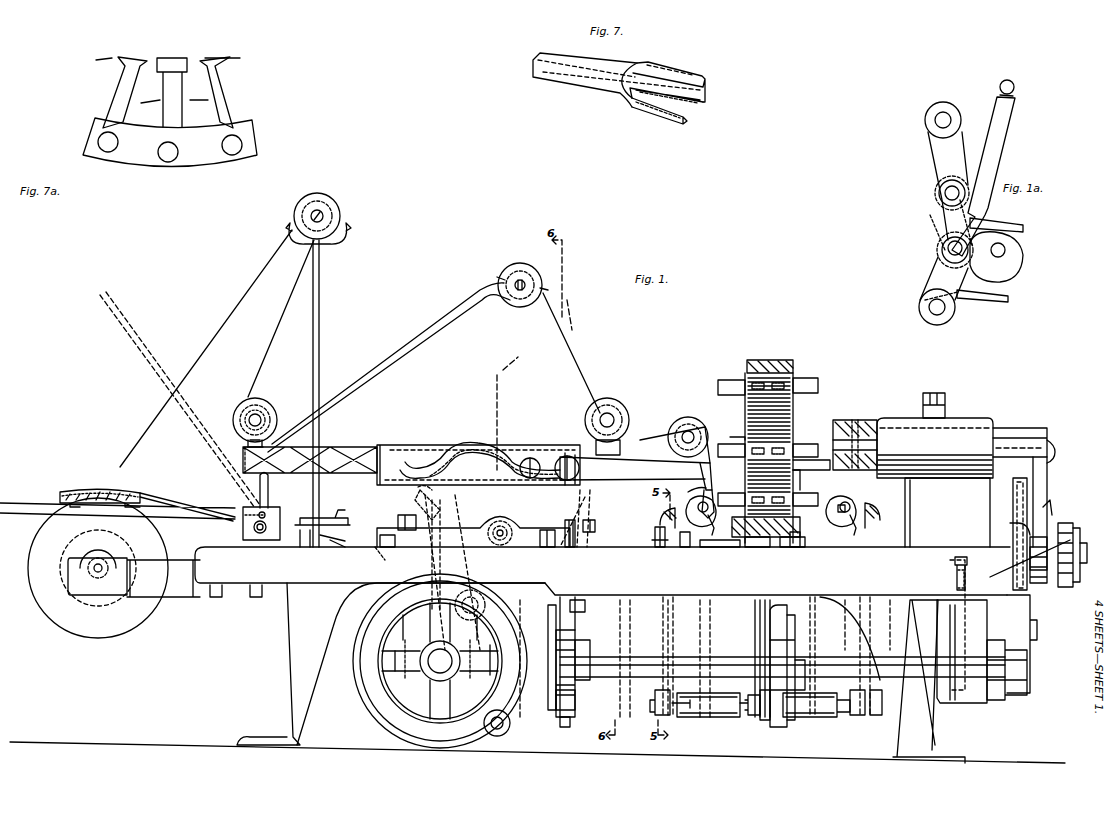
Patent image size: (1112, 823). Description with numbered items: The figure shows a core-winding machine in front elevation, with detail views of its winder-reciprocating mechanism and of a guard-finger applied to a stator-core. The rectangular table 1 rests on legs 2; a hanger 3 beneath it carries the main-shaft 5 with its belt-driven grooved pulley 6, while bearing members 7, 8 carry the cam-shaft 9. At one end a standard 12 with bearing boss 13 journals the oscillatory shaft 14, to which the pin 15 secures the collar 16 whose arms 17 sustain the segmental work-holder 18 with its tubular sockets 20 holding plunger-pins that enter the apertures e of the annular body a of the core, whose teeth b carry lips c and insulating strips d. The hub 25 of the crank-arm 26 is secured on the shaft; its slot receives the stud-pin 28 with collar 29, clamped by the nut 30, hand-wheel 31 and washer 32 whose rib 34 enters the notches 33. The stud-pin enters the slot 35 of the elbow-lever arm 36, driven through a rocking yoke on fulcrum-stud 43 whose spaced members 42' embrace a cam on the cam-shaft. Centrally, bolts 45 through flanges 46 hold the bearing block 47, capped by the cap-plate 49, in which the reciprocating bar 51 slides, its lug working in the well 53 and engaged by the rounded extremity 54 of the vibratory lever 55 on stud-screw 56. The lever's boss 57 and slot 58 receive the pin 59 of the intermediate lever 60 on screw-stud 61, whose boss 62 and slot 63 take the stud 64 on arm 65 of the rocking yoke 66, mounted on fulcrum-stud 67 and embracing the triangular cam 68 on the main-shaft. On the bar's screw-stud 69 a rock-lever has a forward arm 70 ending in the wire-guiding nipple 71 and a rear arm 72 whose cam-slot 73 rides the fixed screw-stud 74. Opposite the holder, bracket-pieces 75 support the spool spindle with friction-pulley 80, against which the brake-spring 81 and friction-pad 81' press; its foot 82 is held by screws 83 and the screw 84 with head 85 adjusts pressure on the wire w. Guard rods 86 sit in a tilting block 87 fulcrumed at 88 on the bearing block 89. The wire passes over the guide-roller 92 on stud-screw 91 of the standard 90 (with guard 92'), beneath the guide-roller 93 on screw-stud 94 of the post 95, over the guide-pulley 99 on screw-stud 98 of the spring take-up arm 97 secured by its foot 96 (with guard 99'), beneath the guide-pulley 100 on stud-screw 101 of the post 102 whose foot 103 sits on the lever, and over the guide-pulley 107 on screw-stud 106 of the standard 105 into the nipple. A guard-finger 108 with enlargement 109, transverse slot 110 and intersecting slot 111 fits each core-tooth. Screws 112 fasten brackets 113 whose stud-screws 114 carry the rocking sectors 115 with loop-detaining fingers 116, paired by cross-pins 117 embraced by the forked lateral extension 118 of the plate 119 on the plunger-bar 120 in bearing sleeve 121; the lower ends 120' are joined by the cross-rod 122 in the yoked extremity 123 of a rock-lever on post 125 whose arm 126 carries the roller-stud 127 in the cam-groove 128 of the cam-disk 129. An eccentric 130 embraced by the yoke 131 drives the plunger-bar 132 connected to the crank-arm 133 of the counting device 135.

In FIG. 1, the table 1 is at (602, 571).
In FIG. 1, the legs 2 is at (601, 673).
In FIG. 1, the hanger 3 is at (428, 631).
In FIG. 1a, the main-shaft 5 is at (998, 250).
In FIG. 1, the main-shaft 5 is at (440, 661).
In FIG. 1, the grooved pulley 6 is at (353, 672).
In FIG. 1, the bearing member 7 is at (554, 657).
In FIG. 1, the bearing member 8 is at (962, 631).
In FIG. 1, the cam-shaft 9 is at (688, 660).
In FIG. 1, the standard 12 is at (947, 512).
In FIG. 1, the bearing boss 13 is at (935, 448).
In FIG. 1, the oscillatory shaft 14 is at (968, 433).
In FIG. 1, the pin 15 is at (856, 420).
In FIG. 1, the collar 16 is at (852, 436).
In FIG. 1, the arms 17 is at (811, 460).
In FIG. 1, the segmental work-holder 18 is at (802, 478).
In FIG. 1, the tubular socket 20 is at (733, 433).
In FIG. 1, the hub 25 is at (1005, 430).
In FIG. 1, the crank-arm 26 is at (1048, 484).
In FIG. 1, the stud-pin 28 is at (1010, 556).
In FIG. 1, the collar 29 is at (1012, 525).
In FIG. 1, the nut 30 is at (1068, 523).
In FIG. 1, the hand-wheel 31 is at (1078, 532).
In FIG. 1, the washer 32 is at (1045, 585).
In FIG. 1, the notches 33 is at (1029, 539).
In FIG. 1, the V-shaped transverse rib 34 is at (1088, 550).
In FIG. 1, the slot 35 is at (1016, 501).
In FIG. 1, the arm 36 is at (1013, 492).
In FIG. 1, the spaced members 42' is at (1007, 670).
In FIG. 1, the fulcrum-stud 43 is at (1037, 630).
In FIG. 1, the bolts 45 is at (497, 517).
In FIG. 1, the flanges 46 is at (547, 538).
In FIG. 1, the bearing block 47 is at (510, 516).
In FIG. 1, the cap-plate 49 is at (417, 445).
In FIG. 1, the reciprocating bar 51 is at (310, 460).
In FIG. 1, the well 53 is at (586, 498).
In FIG. 1a, the rounded extremity 54 is at (1000, 86).
In FIG. 1, the rounded extremity 54 is at (443, 498).
In FIG. 1a, the vibratory lever 55 is at (991, 112).
In FIG. 1, the vibratory lever 55 is at (450, 526).
In FIG. 1, the stud-screw 56 is at (510, 726).
In FIG. 1a, the boss 57 is at (940, 258).
In FIG. 1a, the slot 58 is at (959, 294).
In FIG. 1a, the pin 59 is at (963, 253).
In FIG. 1a, the intermediate lever 60 is at (932, 154).
In FIG. 1, the intermediate lever 60 is at (456, 566).
In FIG. 1, the screw-stud 61 is at (512, 528).
In FIG. 1a, the boss 62 is at (939, 201).
In FIG. 1a, the slot 63 is at (938, 183).
In FIG. 1, the slot 63 is at (500, 600).
In FIG. 1a, the stud 64 is at (945, 193).
In FIG. 1, the stud 64 is at (500, 608).
In FIG. 1a, the arm 65 is at (932, 223).
In FIG. 1a, the rocking yoke 66 is at (1024, 229).
In FIG. 1, the rocking yoke 66 is at (442, 658).
In FIG. 1, the fulcrum-stud 67 is at (562, 668).
In FIG. 1a, the triangular cam 68 is at (996, 257).
In FIG. 1, the triangular cam 68 is at (433, 662).
In FIG. 1, the screw-stud 69 is at (576, 461).
In FIG. 1, the arm 70 is at (635, 453).
In FIG. 1, the wire-guiding nipple 71 is at (703, 503).
In FIG. 1, the arm 72 is at (468, 448).
In FIG. 1, the cam-slot 73 is at (480, 460).
In FIG. 1, the screw-stud 74 is at (530, 458).
In FIG. 1, the bracket-pieces 75 is at (165, 577).
In FIG. 1, the friction-pulley 80 is at (98, 568).
In FIG. 1, the brake-spring 81 is at (117, 504).
In FIG. 1, the friction-pad 81' is at (90, 495).
In FIG. 1, the foot 82 is at (383, 559).
In FIG. 1, the screws 83 is at (386, 539).
In FIG. 1, the screw 84 is at (323, 548).
In FIG. 1, the head 85 is at (322, 528).
In FIG. 1, the rods 86 is at (155, 358).
In FIG. 1, the tilting block 87 is at (248, 508).
In FIG. 1, the fulcrum 88 is at (257, 534).
In FIG. 1, the bearing block 89 is at (275, 512).
In FIG. 1, the standard 90 is at (320, 358).
In FIG. 1, the stud-screw 91 is at (319, 210).
In FIG. 1, the guide-roller 92 is at (333, 216).
In FIG. 1, the guard 92' is at (331, 233).
In FIG. 1, the guide-roller 93 is at (268, 402).
In FIG. 1, the screw-stud 94 is at (250, 415).
In FIG. 1, the post 95 is at (244, 421).
In FIG. 1, the foot 96 is at (247, 445).
In FIG. 1, the spring take-up arm 97 is at (398, 368).
In FIG. 1, the screw-stud 98 is at (517, 278).
In FIG. 1, the guide-pulley 99 is at (526, 278).
In FIG. 1, the guard 99' is at (489, 273).
In FIG. 1, the guide-pulley 100 is at (612, 398).
In FIG. 1, the stud-screw 101 is at (615, 420).
In FIG. 1, the post 102 is at (622, 430).
In FIG. 1, the foot 103 is at (621, 448).
In FIG. 1, the standard 105 is at (700, 468).
In FIG. 1, the screw-stud 106 is at (689, 420).
In FIG. 1, the guide-pulley 107 is at (706, 428).
In FIG. 7, the guard-finger 108 is at (616, 80).
In FIG. 1, the guard-finger 108 is at (728, 386).
In FIG. 7a, the enlargement 109 is at (165, 58).
In FIG. 7, the enlargement 109 is at (670, 72).
In FIG. 7, the transverse slot 110 is at (704, 90).
In FIG. 7, the intersecting slot 111 is at (690, 107).
In FIG. 1, the screws 112 is at (755, 549).
In FIG. 1, the brackets 113 is at (829, 558).
In FIG. 1, the stud-screws 114 is at (698, 508).
In FIG. 1, the rocking sectors 115 is at (825, 520).
In FIG. 1, the loop-detaining fingers 116 is at (841, 509).
In FIG. 1, the cross-pins 117 is at (688, 495).
In FIG. 1, the forked lateral extension 118 is at (846, 508).
In FIG. 1, the plate 119 is at (662, 513).
In FIG. 1, the plunger-bar 120 is at (742, 611).
In FIG. 1, the lower ends 120' is at (756, 715).
In FIG. 1, the bearing sleeve 121 is at (675, 625).
In FIG. 1, the cross-rod 122 is at (677, 700).
In FIG. 1, the yoked extremity 123 is at (708, 715).
In FIG. 1, the post 125 is at (750, 634).
In FIG. 1, the arm 126 is at (747, 716).
In FIG. 1, the roller-stud 127 is at (766, 722).
In FIG. 1, the cam-groove 128 is at (788, 610).
In FIG. 1, the cam-disk 129 is at (795, 625).
In FIG. 1, the eccentric 130 is at (576, 706).
In FIG. 1, the yoke 131 is at (575, 726).
In FIG. 1, the plunger-bar 132 is at (578, 612).
In FIG. 1, the crank-arm 133 is at (579, 656).
In FIG. 1, the counting device 135 is at (585, 552).
In FIG. 7a, the annular body a is at (170, 142).
In FIG. 1, the annular body a is at (770, 360).
In FIG. 7a, the teeth b is at (168, 92).
In FIG. 7a, the lips c is at (167, 58).
In FIG. 7a, the insulating strips d is at (172, 104).
In FIG. 1, the insulating strips d is at (747, 366).
In FIG. 7a, the apertures e is at (168, 152).
In FIG. 1, the wire w is at (138, 437).